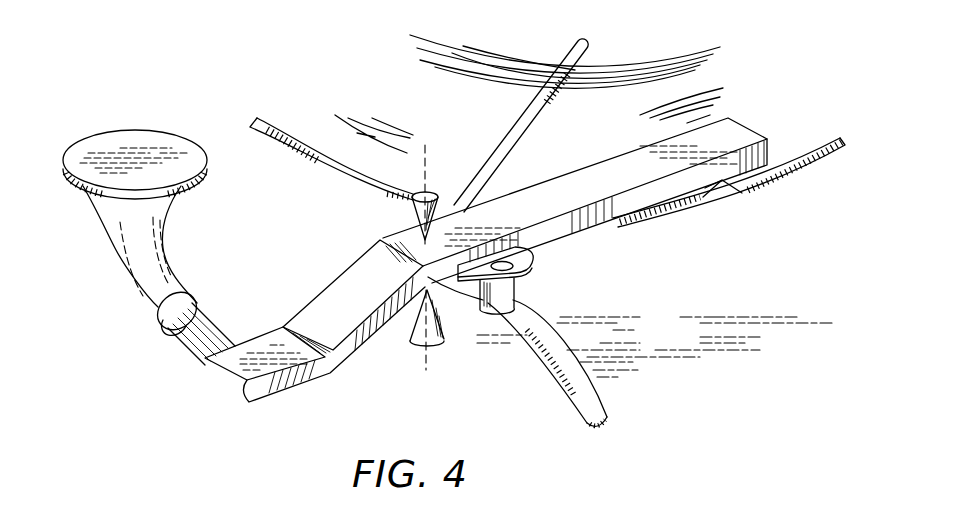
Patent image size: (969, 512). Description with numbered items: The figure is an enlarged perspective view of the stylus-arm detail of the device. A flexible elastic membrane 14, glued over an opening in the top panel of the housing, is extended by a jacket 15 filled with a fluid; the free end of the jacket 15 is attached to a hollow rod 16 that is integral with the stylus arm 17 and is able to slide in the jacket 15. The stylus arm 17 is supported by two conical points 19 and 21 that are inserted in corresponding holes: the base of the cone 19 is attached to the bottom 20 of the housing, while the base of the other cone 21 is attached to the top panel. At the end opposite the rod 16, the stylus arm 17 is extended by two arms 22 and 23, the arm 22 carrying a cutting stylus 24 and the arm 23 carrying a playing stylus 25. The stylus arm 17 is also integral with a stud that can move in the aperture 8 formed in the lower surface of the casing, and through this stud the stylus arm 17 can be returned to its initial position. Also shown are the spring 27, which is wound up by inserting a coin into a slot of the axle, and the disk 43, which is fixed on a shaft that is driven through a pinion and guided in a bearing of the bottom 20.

The aperture 8 is at (577, 395).
The flexible elastic membrane 14 is at (140, 157).
The jacket 15 is at (132, 257).
The hollow rod 16 is at (193, 337).
The stylus arm 17 is at (358, 275).
The conical point 19 is at (433, 340).
The bottom of the housing 20 is at (775, 328).
The conical point 21 is at (417, 190).
The arm 22 is at (520, 120).
The arm 23 is at (640, 153).
The cutting stylus 24 is at (583, 58).
The playing stylus 25 is at (723, 182).
The spring 27 is at (513, 293).
The disk 43 is at (787, 152).